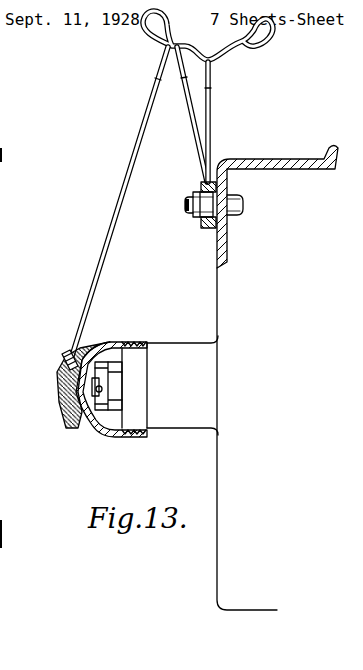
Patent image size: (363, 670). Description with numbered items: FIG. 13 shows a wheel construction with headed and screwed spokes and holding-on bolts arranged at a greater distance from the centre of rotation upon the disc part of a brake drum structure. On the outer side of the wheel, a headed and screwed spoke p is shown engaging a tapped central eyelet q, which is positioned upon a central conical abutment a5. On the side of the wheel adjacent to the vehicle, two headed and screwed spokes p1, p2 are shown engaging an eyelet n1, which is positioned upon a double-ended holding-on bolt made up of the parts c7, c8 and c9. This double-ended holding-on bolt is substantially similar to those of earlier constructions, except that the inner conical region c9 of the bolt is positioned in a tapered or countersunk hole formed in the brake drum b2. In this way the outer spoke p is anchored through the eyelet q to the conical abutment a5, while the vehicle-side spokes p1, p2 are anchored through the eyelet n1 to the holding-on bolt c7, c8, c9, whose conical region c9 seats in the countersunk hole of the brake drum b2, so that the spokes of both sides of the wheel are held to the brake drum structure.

The headed and screwed spoke p is at (111, 231).
The headed and screwed spoke p1 is at (191, 118).
The headed and screwed spoke p2 is at (212, 122).
The brake drum b2 is at (228, 181).
The double-ended holding-on bolt c7 is at (195, 213).
The double-ended holding-on bolt c8 is at (212, 228).
The inner conical region of bolt c9 is at (229, 219).
The eyelet n1 is at (203, 222).
The tapped central eyelet q is at (76, 356).
The central conical abutment a5 is at (66, 388).